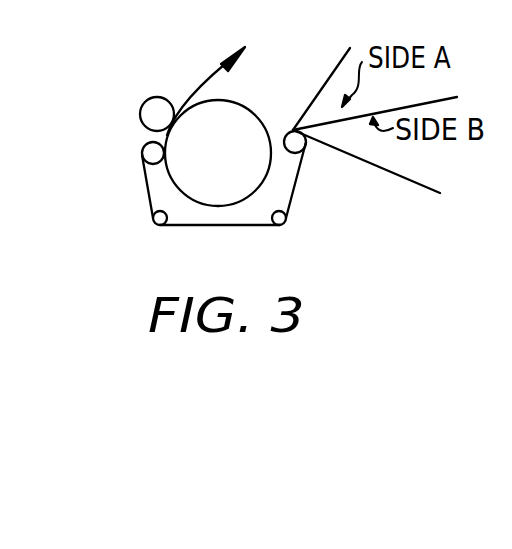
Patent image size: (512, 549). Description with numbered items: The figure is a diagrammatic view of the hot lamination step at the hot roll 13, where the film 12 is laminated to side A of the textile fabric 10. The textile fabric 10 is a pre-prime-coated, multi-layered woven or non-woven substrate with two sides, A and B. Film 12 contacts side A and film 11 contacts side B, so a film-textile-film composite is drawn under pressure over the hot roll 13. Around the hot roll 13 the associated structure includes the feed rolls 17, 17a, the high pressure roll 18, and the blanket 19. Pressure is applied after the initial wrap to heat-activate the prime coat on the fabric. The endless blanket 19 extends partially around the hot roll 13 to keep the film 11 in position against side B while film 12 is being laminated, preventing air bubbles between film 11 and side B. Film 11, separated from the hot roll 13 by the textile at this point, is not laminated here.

The textile fabric 10 is at (442, 99).
The film 11 is at (416, 180).
The film 12 is at (343, 62).
The hot roll 13 is at (208, 187).
The feed roll 17 is at (298, 152).
The feed roll 17a is at (150, 156).
The high pressure roll 18 is at (152, 112).
The blanket 19 is at (261, 226).